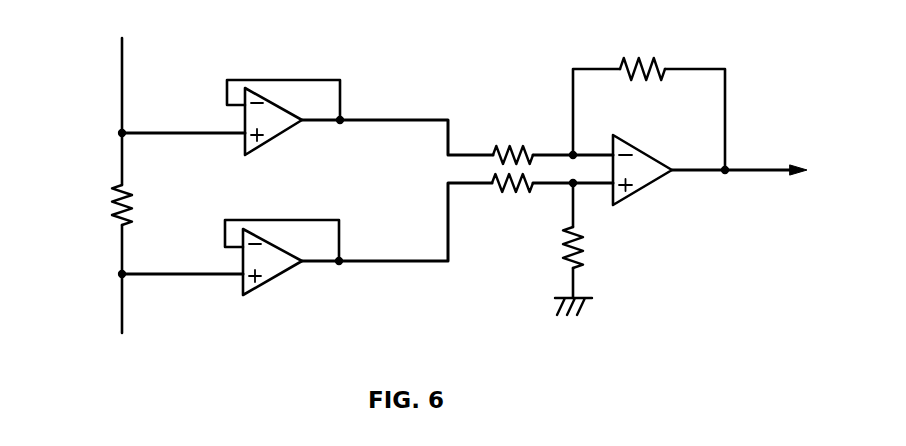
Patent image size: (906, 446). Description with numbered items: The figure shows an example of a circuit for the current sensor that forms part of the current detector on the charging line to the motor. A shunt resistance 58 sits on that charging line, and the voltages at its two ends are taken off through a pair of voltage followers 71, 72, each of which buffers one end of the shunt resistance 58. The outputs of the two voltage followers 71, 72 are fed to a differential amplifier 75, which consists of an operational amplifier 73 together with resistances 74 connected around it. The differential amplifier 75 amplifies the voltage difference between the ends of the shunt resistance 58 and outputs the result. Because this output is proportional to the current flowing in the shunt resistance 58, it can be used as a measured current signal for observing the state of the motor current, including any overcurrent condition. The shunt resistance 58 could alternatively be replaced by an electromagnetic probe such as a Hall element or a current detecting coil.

The shunt resistance 58 is at (110, 204).
The voltage follower 71 is at (282, 133).
The voltage follower 72 is at (273, 277).
The operational amplifier 73 is at (648, 185).
The resistances 74 is at (623, 58).
The differential amplifier 75 is at (613, 227).